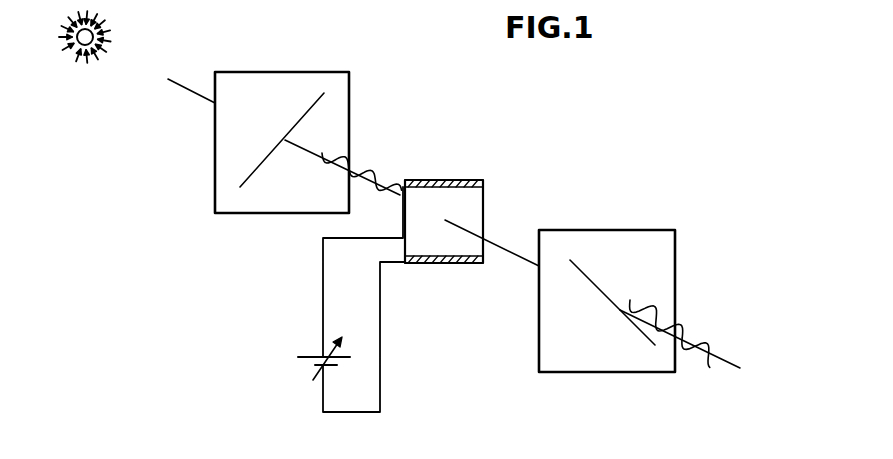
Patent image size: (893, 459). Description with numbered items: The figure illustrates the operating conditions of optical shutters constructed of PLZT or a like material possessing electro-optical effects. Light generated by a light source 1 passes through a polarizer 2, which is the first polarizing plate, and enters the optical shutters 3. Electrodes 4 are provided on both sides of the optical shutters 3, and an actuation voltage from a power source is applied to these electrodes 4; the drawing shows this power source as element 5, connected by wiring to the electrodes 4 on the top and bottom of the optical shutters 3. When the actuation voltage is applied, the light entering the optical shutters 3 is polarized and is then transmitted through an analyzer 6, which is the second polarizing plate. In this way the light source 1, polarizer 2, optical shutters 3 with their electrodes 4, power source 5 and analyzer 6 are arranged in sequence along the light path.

The light source 1 is at (82, 48).
The polarizer 2 is at (349, 103).
The optical shutters 3 is at (483, 211).
The electrodes 4 is at (483, 183).
The variable voltage source 5 is at (310, 362).
The analyzer 6 is at (675, 230).